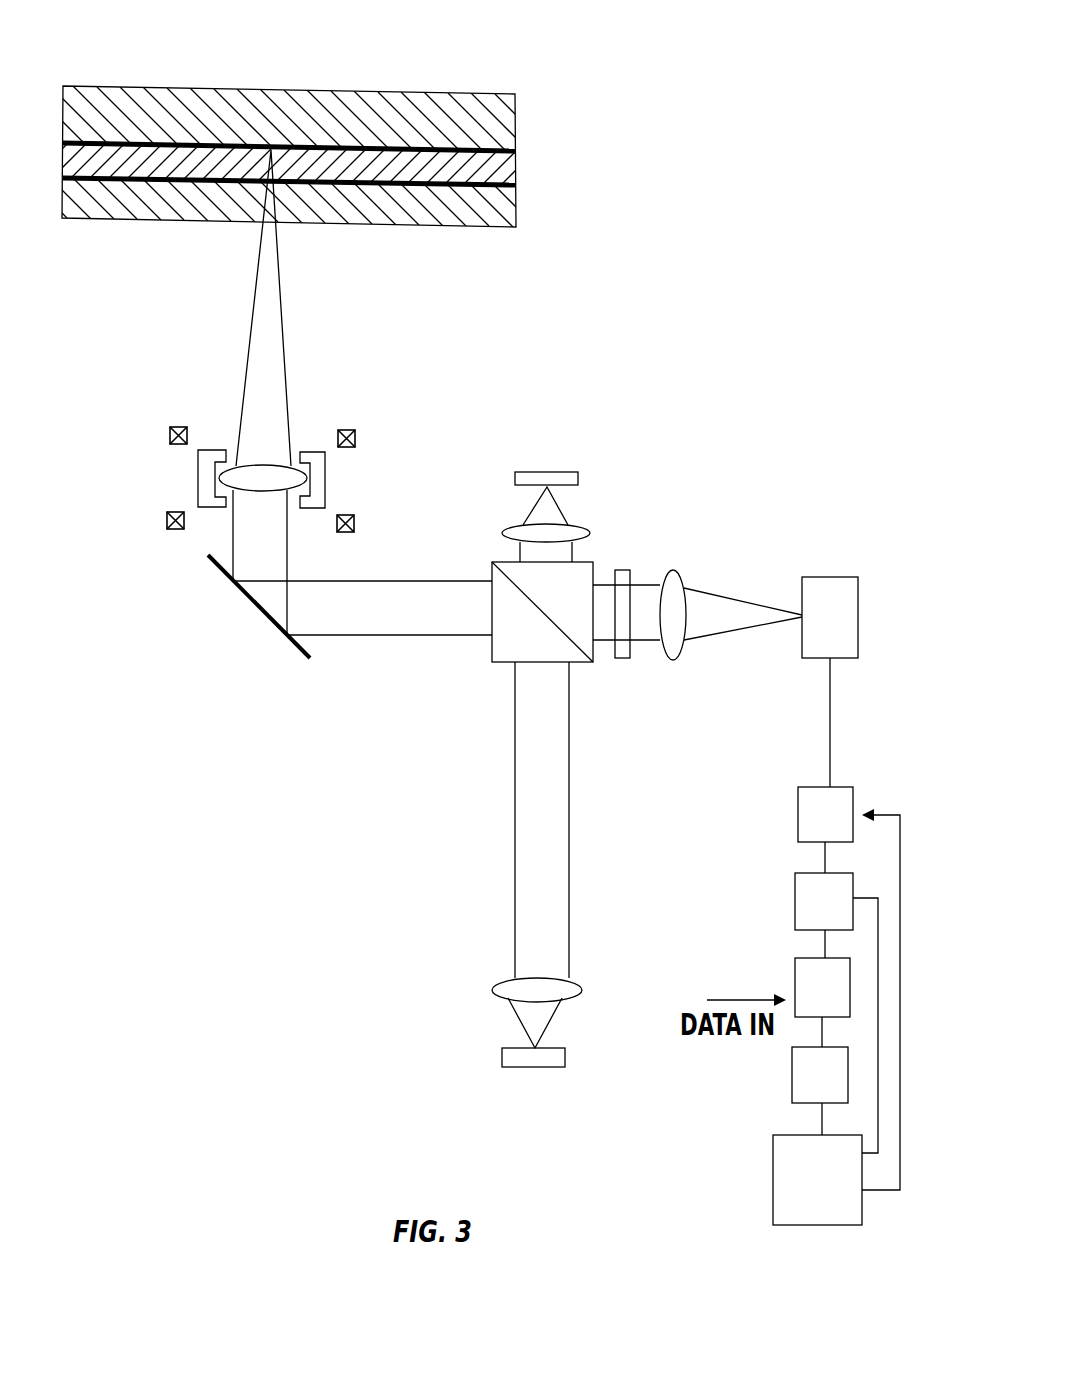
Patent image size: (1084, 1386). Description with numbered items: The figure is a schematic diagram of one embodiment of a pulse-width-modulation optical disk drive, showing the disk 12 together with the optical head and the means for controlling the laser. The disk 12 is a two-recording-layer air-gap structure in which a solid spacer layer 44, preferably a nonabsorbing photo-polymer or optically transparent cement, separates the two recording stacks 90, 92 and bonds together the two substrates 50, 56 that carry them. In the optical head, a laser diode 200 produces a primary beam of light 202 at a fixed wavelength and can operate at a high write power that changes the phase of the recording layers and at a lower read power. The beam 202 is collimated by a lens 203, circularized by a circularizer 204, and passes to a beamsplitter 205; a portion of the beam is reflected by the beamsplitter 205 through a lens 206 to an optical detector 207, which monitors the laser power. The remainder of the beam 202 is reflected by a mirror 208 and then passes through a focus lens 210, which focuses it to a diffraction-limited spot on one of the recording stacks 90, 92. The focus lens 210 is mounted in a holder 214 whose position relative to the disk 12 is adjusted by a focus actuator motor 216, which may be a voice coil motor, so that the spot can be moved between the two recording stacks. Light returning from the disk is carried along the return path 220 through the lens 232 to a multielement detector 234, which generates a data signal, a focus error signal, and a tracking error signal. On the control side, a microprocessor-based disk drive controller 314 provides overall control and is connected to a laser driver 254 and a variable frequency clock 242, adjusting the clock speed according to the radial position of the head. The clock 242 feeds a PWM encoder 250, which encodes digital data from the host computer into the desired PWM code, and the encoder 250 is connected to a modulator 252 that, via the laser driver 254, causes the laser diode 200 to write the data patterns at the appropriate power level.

The disk 12 is at (388, 296).
The solid spacer layer 44 is at (309, 154).
The substrate 50 is at (437, 213).
The substrate 56 is at (420, 97).
The recording stack 90 is at (168, 182).
The second recording stack 92 is at (203, 143).
The laser diode 200 is at (830, 577).
The primary beam of light 202 is at (740, 612).
The lens 203 is at (677, 572).
The circularizer 204 is at (623, 570).
The beamsplitter 205 is at (492, 575).
The lens 206 is at (517, 527).
The optical detector 207 is at (543, 472).
The mirror 208 is at (247, 598).
The focus lens 210 is at (297, 497).
The holder 214 is at (315, 452).
The focus actuator motor 216 is at (356, 436).
The reflected light beam 220 is at (514, 708).
The lens 232 is at (492, 988).
The multielement detector 234 is at (502, 1057).
The variable frequency clock 242 is at (792, 1070).
The PWM encoder 250 is at (795, 965).
The modulator 252 is at (795, 897).
The laser driver 254 is at (798, 805).
The disk drive controller 314 is at (773, 1163).